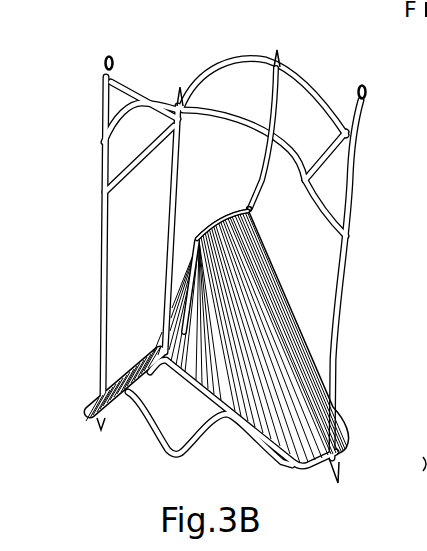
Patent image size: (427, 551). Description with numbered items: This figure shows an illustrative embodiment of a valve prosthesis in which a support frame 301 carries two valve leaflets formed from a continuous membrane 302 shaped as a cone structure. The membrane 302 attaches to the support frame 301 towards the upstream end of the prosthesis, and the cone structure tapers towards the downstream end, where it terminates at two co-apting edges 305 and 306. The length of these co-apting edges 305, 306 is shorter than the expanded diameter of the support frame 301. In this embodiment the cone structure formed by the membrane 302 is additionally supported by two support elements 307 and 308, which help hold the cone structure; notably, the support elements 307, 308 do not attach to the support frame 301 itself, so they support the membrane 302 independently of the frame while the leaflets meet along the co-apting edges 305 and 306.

The support frame 301 is at (153, 100).
The continuous membrane 302 is at (260, 338).
The co-apting edge 305 is at (234, 211).
The co-apting edge 306 is at (239, 211).
The support element 307 is at (194, 250).
The support element 308 is at (250, 207).